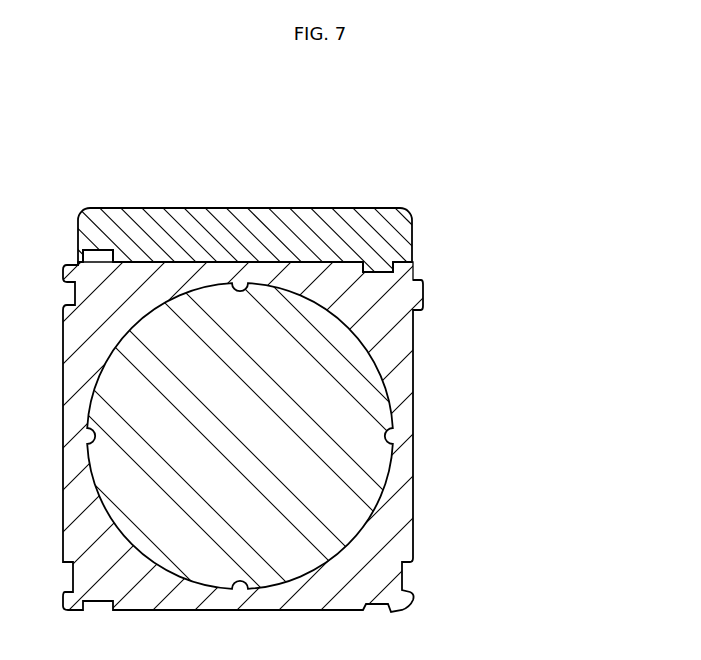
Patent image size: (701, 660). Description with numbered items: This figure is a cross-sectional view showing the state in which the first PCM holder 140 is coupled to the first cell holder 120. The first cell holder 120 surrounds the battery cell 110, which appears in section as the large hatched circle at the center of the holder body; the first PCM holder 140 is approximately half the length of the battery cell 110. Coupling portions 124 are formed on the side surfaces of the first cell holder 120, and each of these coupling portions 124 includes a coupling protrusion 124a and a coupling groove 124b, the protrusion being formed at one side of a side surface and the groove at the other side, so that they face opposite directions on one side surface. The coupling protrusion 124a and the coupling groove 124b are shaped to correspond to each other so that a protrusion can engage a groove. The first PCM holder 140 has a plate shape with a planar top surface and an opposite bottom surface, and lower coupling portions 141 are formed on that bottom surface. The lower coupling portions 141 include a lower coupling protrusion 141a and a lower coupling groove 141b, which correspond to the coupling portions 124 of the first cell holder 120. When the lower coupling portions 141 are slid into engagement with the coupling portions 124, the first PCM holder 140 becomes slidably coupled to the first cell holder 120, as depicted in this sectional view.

The battery cell 110 is at (380, 455).
The first cell holder 120 is at (403, 525).
The coupling portions 124 is at (530, 272).
The coupling protrusion 124a is at (97, 257).
The coupling groove 124b is at (383, 295).
The first PCM holder 140 is at (405, 234).
The lower coupling portions 141 is at (323, 140).
The lower coupling protrusion 141a is at (377, 266).
The lower coupling groove 141b is at (97, 258).